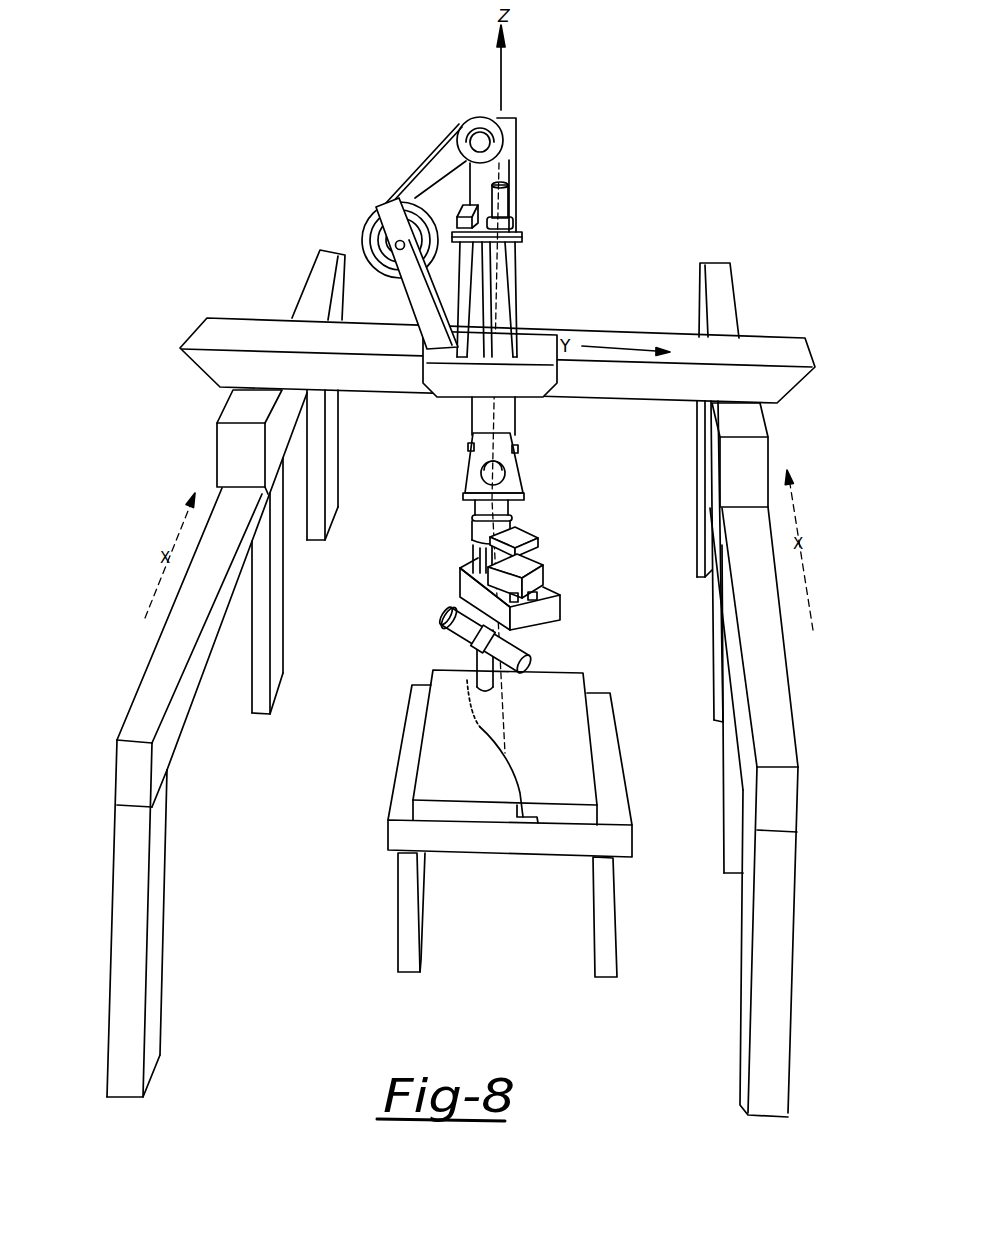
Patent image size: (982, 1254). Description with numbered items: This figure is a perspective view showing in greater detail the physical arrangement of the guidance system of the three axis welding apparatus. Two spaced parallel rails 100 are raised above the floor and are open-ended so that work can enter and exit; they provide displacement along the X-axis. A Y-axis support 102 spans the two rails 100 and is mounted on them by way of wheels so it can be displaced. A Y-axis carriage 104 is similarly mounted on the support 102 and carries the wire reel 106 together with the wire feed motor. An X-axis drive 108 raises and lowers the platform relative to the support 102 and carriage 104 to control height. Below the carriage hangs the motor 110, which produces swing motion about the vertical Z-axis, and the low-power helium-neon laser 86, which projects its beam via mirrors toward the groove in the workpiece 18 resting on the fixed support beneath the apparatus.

The workpiece 18 is at (577, 780).
The helium-neon laser 86 is at (455, 633).
The rails 100 is at (152, 675).
The Y-axis support 102 is at (773, 347).
The Y-axis carriage 104 is at (544, 400).
The wire reel 106 is at (370, 216).
The X-axis drive 108 is at (472, 507).
The motor 110 is at (523, 533).